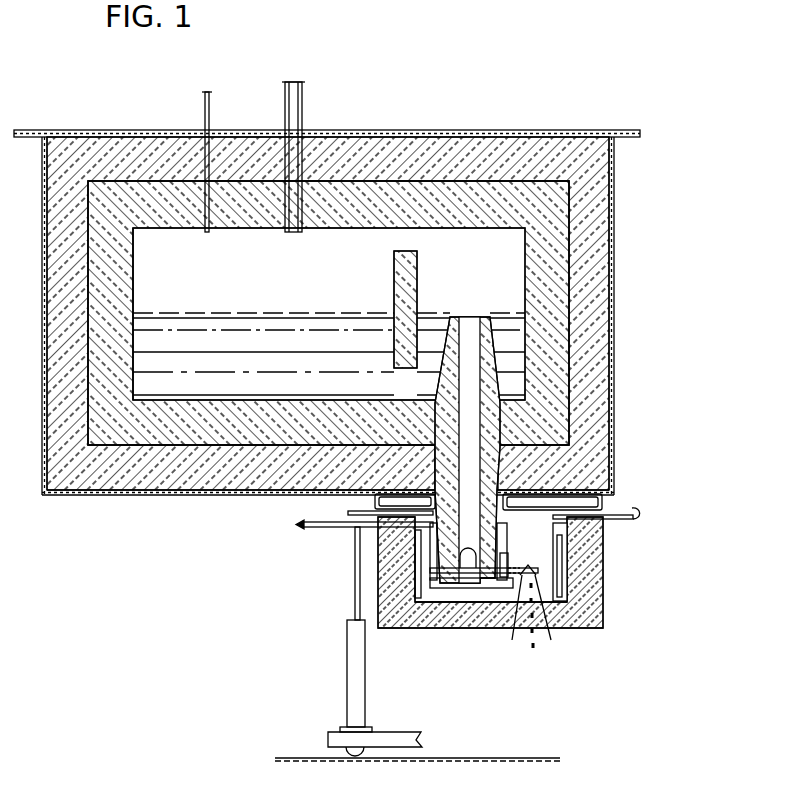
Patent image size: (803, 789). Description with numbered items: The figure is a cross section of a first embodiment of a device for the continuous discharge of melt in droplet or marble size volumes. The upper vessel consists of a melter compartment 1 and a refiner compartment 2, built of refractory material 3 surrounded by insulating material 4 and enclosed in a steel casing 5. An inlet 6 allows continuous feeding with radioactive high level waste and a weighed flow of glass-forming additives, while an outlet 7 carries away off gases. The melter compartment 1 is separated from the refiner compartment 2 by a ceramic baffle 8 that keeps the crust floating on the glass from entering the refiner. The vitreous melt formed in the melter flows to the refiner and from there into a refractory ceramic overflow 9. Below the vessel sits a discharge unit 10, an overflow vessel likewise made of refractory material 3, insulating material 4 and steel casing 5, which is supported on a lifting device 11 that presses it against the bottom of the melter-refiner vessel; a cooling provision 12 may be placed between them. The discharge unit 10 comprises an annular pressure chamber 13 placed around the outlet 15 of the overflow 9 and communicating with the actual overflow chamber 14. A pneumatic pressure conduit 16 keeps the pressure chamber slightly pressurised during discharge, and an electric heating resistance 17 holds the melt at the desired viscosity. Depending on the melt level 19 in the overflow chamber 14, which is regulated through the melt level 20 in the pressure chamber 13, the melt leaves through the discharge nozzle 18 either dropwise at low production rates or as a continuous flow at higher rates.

The melter compartment 1 is at (165, 240).
The refiner compartment 2 is at (470, 245).
The refractory material 3 is at (133, 296).
The insulating material 4 is at (74, 415).
The steel casing 5 is at (614, 263).
The inlet 6 is at (209, 115).
The outlet 7 is at (302, 110).
The ceramic baffle 8 is at (405, 262).
The refractory ceramic overflow 9 is at (492, 345).
The discharge unit 10 is at (606, 584).
The lifting device 11 is at (332, 727).
The cooling provision 12 is at (606, 503).
The pressure chamber 13 is at (432, 615).
The overflow chamber 14 is at (513, 630).
The outlet of the overflow 15 is at (485, 592).
The pneumatic pressure conduit 16 is at (322, 522).
The electric heating resistance 17 is at (418, 554).
The discharge nozzle 18 is at (536, 580).
The melt level in the overflow chamber 19 is at (464, 600).
The melt level in the pressure chamber 20 is at (512, 568).